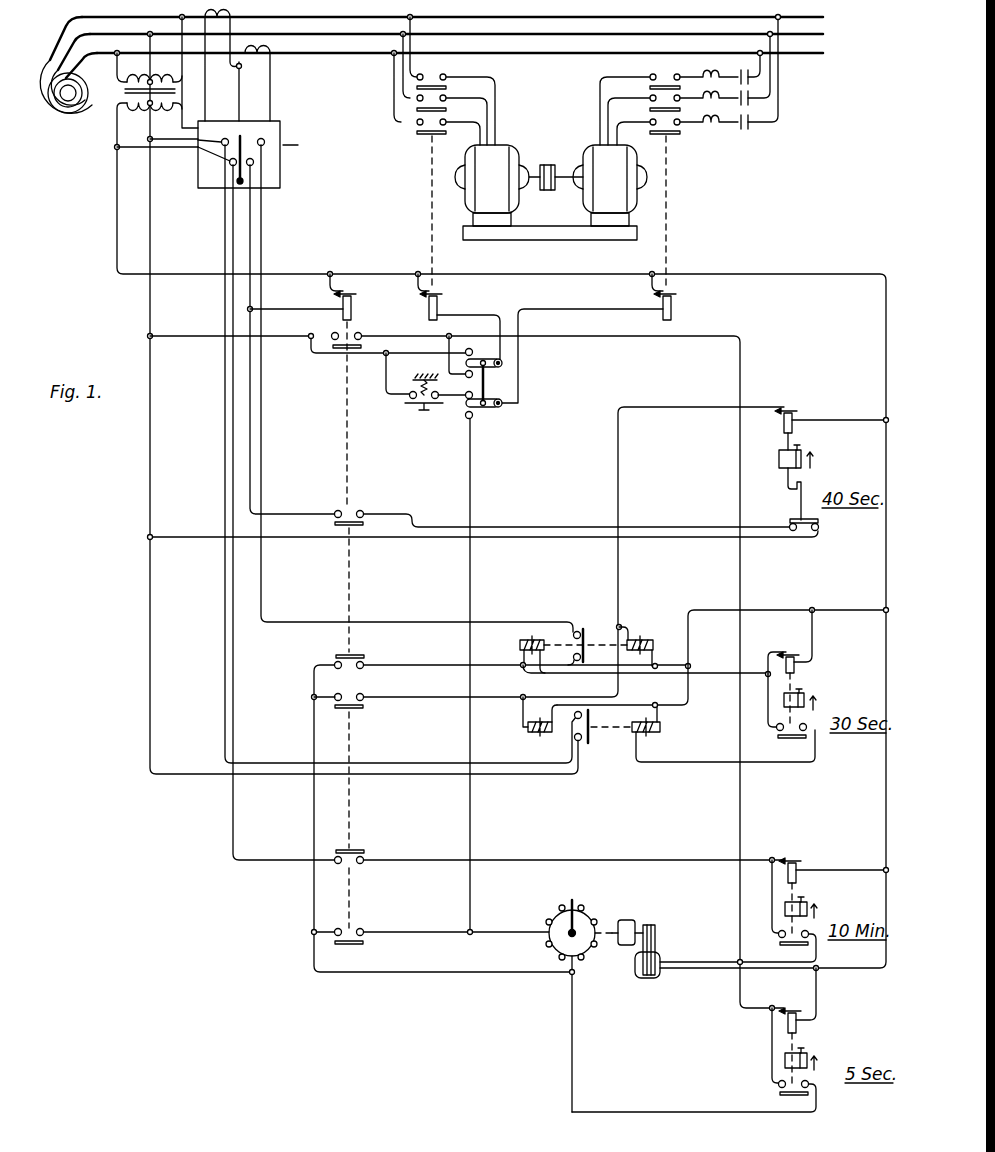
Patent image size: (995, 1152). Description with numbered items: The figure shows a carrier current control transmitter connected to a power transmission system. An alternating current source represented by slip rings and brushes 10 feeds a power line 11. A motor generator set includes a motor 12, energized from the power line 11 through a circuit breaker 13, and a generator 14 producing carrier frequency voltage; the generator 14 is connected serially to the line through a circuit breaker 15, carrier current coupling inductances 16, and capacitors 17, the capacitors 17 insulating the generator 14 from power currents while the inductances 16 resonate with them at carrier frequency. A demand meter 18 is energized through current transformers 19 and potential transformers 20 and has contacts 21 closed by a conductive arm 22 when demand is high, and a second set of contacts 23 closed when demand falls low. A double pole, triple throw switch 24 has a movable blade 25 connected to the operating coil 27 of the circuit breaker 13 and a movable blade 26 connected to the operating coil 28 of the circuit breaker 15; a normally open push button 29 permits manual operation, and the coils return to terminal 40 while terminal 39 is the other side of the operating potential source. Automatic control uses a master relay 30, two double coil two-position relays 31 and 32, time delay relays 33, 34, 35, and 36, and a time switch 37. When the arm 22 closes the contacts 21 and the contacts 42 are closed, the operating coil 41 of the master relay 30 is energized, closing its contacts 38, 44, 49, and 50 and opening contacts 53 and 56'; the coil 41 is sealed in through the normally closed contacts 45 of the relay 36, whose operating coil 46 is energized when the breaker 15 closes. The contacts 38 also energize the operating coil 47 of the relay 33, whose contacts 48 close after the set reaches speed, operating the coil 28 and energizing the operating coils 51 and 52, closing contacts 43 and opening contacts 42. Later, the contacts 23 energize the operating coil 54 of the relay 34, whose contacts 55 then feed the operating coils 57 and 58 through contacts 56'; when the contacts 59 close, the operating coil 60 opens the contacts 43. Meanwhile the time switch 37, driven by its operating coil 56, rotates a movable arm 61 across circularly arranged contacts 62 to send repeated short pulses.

The slip rings and associated brushes 10 is at (70, 118).
The power line 11 is at (567, 17).
The motor 12 is at (505, 148).
The circuit breaker 13 is at (425, 164).
The generator 14 is at (580, 204).
The circuit breaker 15 is at (688, 164).
The carrier current coupling inductances 16 is at (713, 124).
The capacitors 17 is at (752, 127).
The demand meter 18 is at (208, 190).
The current transformers 19 is at (257, 45).
The potential transformers 20 is at (145, 79).
The contacts 21 is at (253, 166).
The arm 22 is at (243, 136).
The second set of contacts 23 is at (228, 165).
The double pole, triple throw switch 24 is at (486, 381).
The movable blade 25 is at (490, 360).
The movable blade 26 is at (495, 410).
The operating coil 27 is at (441, 303).
The operating coil 28 is at (674, 305).
The push button 29 is at (413, 407).
The master relay 30 is at (343, 478).
The two-position relay 31 is at (610, 621).
The two-position relay 32 is at (620, 766).
The time delay relay 33 is at (835, 1044).
The time delay relay 34 is at (832, 891).
The time delay relay 35 is at (830, 687).
The time delay relay 36 is at (778, 464).
The time switch 37 is at (645, 906).
The contacts 38 is at (361, 333).
The terminal 39 is at (150, 137).
The terminal 40 is at (115, 150).
The operating coil 41 is at (356, 302).
The contacts 42 is at (575, 631).
The contacts 43 is at (575, 740).
The contacts 44 is at (360, 510).
The contacts 45 is at (792, 532).
The operating coil 46 is at (790, 413).
The operating coil 47 is at (796, 1012).
The contacts 48 is at (779, 1086).
The contacts 49 is at (364, 929).
The contacts 50 is at (346, 693).
The operating coil 51 is at (526, 734).
The operating coil 52 is at (655, 643).
The contacts 53 is at (364, 863).
The operating coil 54 is at (797, 862).
The contacts 55 is at (779, 936).
The operating coil 56 is at (666, 951).
The contacts 56' is at (369, 669).
The operating coil 57 is at (522, 641).
The operating coil 58 is at (793, 656).
The contacts 59 is at (807, 726).
The operating coil 60 is at (660, 735).
The movable arm 61 is at (578, 918).
The contacts 62 is at (548, 923).